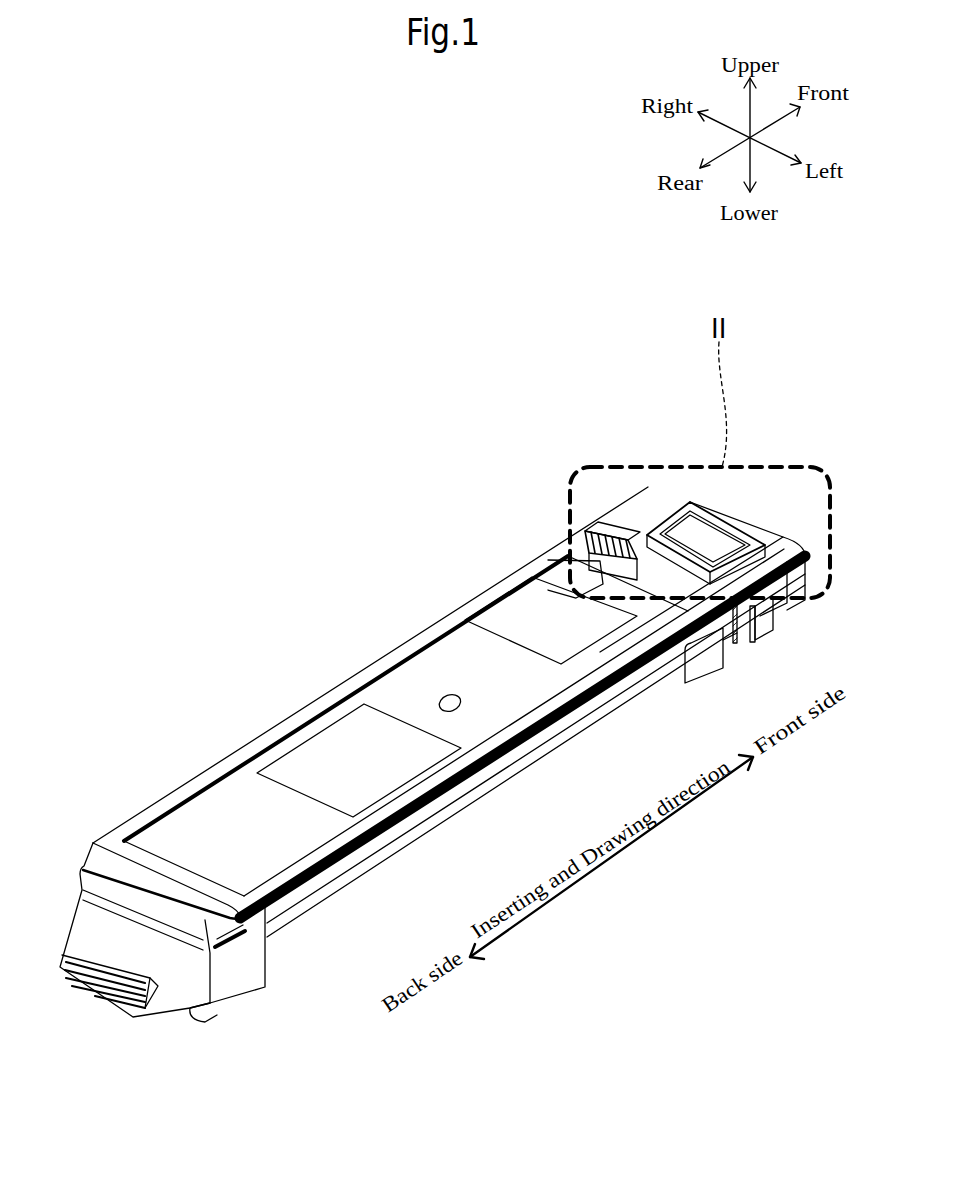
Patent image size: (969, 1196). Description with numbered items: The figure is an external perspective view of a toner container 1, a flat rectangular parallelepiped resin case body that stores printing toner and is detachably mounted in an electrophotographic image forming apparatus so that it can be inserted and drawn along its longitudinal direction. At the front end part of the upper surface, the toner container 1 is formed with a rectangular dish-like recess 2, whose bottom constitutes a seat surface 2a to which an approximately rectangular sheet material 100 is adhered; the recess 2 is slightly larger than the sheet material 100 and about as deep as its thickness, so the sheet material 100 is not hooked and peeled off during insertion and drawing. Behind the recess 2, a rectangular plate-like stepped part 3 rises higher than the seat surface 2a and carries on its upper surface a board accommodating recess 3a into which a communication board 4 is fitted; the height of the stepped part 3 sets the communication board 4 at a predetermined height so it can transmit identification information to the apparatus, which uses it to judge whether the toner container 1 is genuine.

The toner container 1 is at (336, 615).
The recess 2 is at (692, 498).
The seat surface 2a is at (688, 498).
The stepped part 3 is at (582, 550).
The board accommodating recess 3a is at (585, 529).
The communication board 4 is at (625, 533).
The sheet material 100 is at (722, 522).